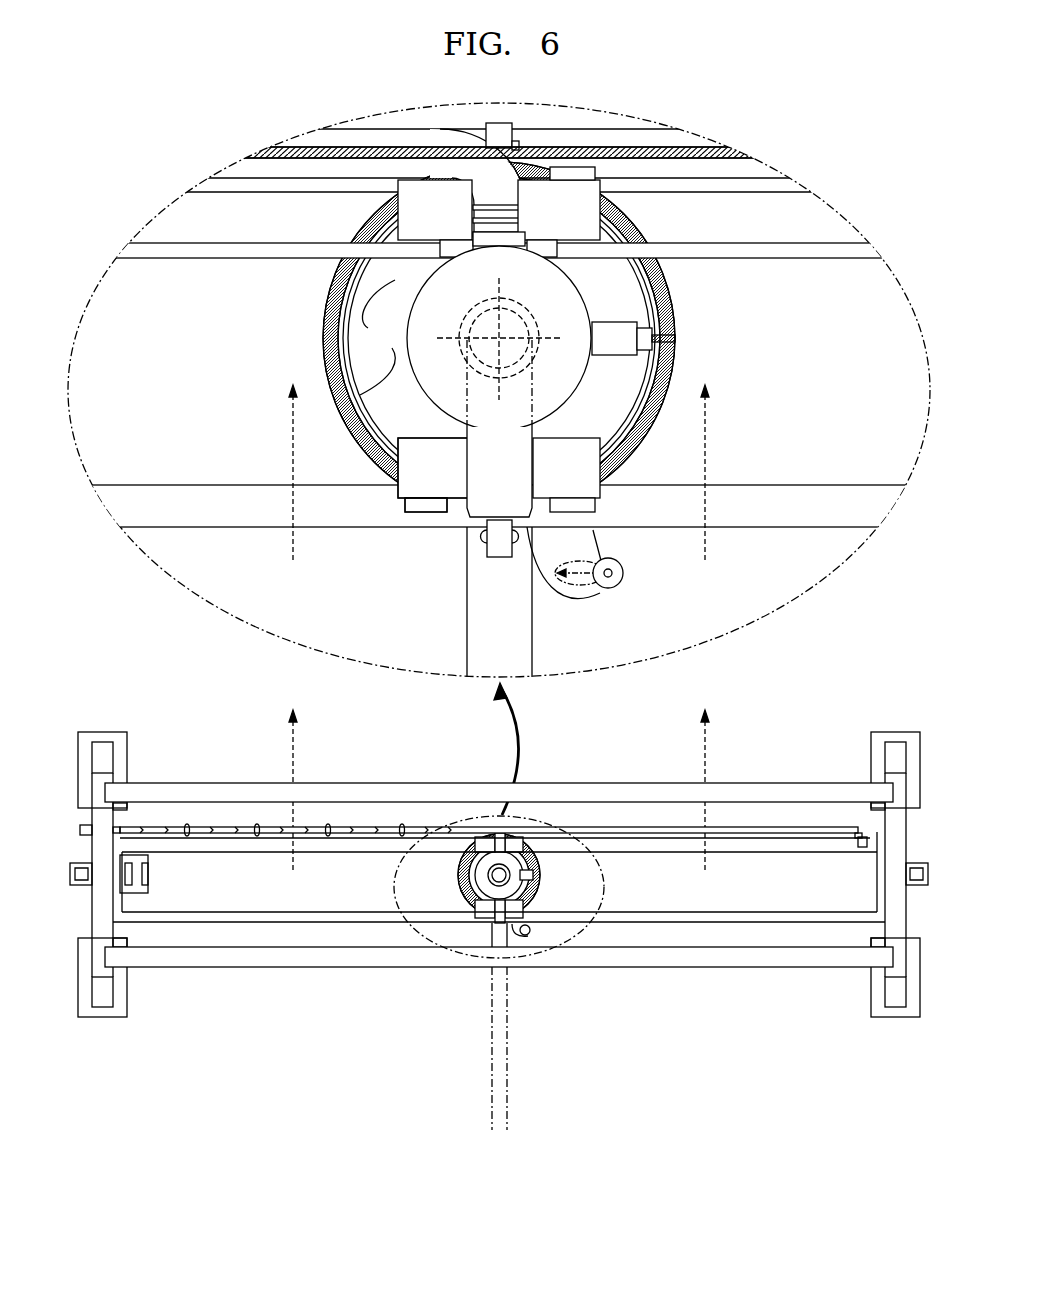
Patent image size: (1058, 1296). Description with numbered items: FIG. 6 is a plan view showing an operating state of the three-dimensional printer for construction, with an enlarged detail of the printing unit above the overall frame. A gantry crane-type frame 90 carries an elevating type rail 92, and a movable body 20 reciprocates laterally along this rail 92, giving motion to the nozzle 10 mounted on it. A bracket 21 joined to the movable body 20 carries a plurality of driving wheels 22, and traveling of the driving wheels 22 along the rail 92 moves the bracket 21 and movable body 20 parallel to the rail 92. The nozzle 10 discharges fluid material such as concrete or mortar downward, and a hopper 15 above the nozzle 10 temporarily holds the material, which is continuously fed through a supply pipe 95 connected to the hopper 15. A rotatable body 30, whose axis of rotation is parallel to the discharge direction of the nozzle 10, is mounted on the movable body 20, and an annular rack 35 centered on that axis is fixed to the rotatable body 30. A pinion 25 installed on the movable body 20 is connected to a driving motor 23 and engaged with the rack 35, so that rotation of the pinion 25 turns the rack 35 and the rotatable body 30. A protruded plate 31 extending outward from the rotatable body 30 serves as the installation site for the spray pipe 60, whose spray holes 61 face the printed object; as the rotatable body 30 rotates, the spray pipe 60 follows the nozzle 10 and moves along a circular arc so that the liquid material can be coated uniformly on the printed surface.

The nozzle 10 is at (520, 363).
The hopper 15 is at (515, 257).
The movable body 20 is at (475, 875).
The bracket 21 is at (410, 483).
The driving wheels 22 is at (422, 512).
The driving motor 23 is at (650, 327).
The pinion 25 is at (677, 338).
The rotatable body 30 is at (322, 335).
The protruded plate 31 is at (593, 547).
The annular rack 35 is at (675, 360).
The spray pipe 60 is at (623, 575).
The spray holes 61 is at (583, 587).
The frame 90 is at (773, 766).
The rail 92 is at (332, 918).
The supply pipe 95 is at (392, 825).